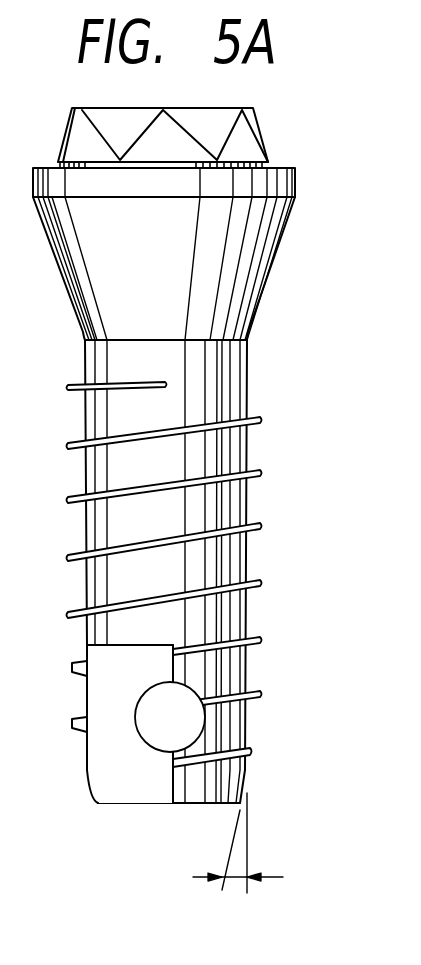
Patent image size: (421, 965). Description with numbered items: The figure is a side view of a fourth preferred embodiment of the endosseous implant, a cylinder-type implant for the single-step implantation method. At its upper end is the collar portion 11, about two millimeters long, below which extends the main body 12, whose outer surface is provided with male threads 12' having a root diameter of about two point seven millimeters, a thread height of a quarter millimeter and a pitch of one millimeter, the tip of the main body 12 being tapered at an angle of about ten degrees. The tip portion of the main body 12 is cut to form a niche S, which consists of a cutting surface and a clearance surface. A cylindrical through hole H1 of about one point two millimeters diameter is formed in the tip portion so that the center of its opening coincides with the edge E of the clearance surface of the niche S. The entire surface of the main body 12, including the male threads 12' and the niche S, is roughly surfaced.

The collar portion 11 is at (240, 263).
The main body 12 is at (204, 571).
The male threads 12' is at (200, 574).
The niche S is at (120, 702).
The edge of the clearance surface E is at (175, 673).
The through hole H1 is at (180, 732).